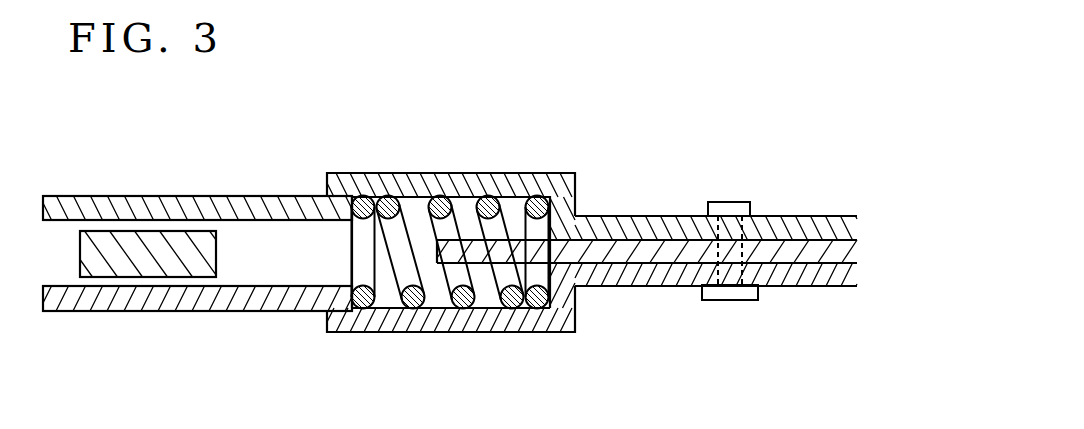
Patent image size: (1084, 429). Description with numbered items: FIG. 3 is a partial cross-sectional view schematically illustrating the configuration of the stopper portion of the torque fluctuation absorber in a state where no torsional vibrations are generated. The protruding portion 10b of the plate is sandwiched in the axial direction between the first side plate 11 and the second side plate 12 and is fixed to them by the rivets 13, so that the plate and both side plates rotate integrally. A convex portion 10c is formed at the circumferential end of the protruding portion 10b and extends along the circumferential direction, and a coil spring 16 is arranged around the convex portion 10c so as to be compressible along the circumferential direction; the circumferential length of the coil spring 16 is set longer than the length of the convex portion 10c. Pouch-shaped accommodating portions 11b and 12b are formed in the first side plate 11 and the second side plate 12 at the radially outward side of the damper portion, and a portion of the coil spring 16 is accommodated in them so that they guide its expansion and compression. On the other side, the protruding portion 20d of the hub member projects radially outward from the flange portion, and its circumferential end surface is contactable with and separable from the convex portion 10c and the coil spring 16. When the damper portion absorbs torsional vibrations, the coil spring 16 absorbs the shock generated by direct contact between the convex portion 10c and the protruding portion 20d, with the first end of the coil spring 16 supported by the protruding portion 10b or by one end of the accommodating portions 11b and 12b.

The protruding portion 10b is at (657, 248).
The convex portion 10c is at (513, 238).
The first side plate 11 is at (223, 298).
The accommodating portion 11b is at (502, 318).
The second side plate 12 is at (183, 196).
The accommodating portion 12b is at (414, 180).
The rivet 13 is at (727, 207).
The coil spring 16 is at (413, 300).
The protruding portion 20d is at (148, 267).